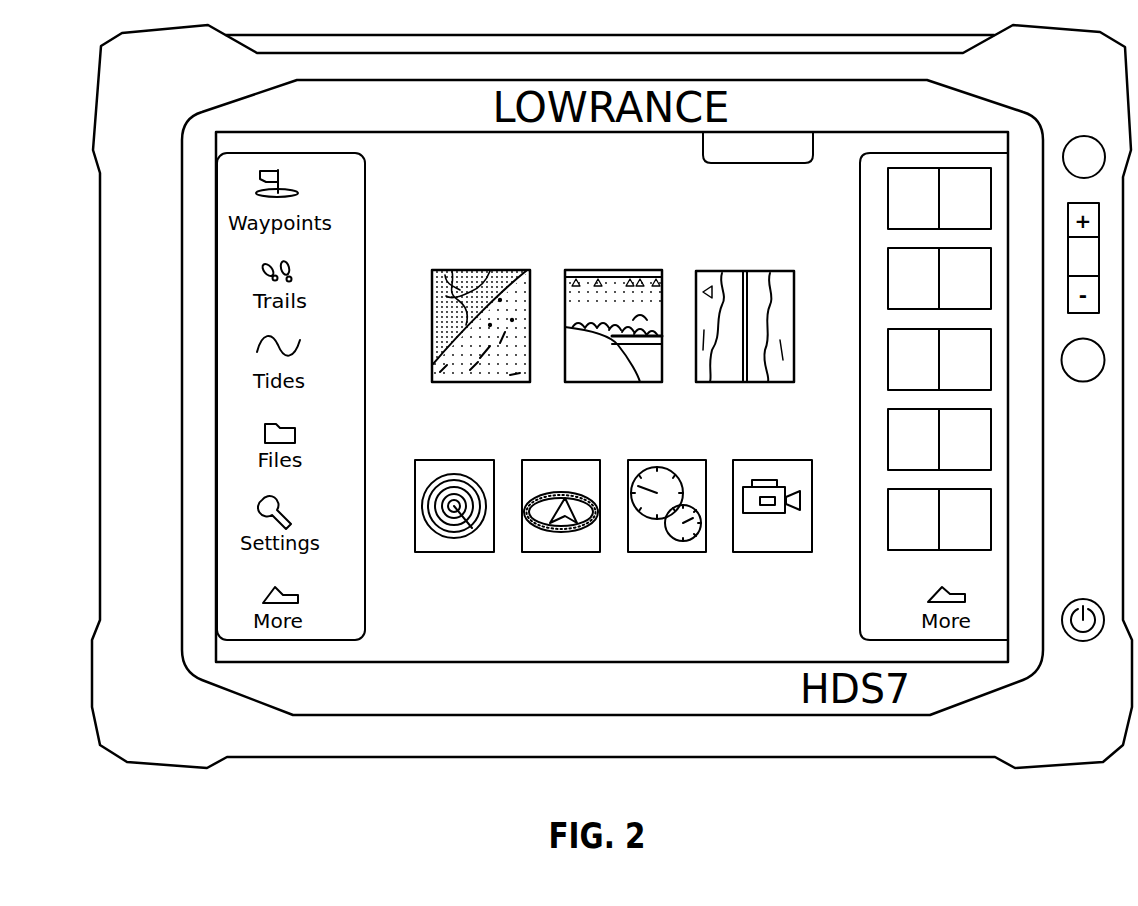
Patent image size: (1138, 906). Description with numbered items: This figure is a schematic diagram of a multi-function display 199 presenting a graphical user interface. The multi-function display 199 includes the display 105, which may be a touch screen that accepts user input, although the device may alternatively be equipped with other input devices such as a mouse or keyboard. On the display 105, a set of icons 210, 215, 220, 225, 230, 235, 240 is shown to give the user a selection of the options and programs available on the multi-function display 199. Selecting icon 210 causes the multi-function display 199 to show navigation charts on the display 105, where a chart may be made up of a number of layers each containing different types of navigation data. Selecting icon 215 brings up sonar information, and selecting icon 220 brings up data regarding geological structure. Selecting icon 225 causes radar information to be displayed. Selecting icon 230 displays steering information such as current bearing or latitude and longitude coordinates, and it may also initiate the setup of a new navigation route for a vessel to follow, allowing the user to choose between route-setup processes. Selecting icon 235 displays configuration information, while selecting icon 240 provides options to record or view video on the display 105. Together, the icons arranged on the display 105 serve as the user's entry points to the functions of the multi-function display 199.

The display 105 is at (293, 140).
The multi-function display 199 is at (357, 733).
The icon 210 is at (452, 282).
The icon 215 is at (587, 285).
The icon 220 is at (733, 282).
The icon 225 is at (465, 468).
The icon 230 is at (588, 473).
The icon 235 is at (638, 470).
The icon 240 is at (748, 472).